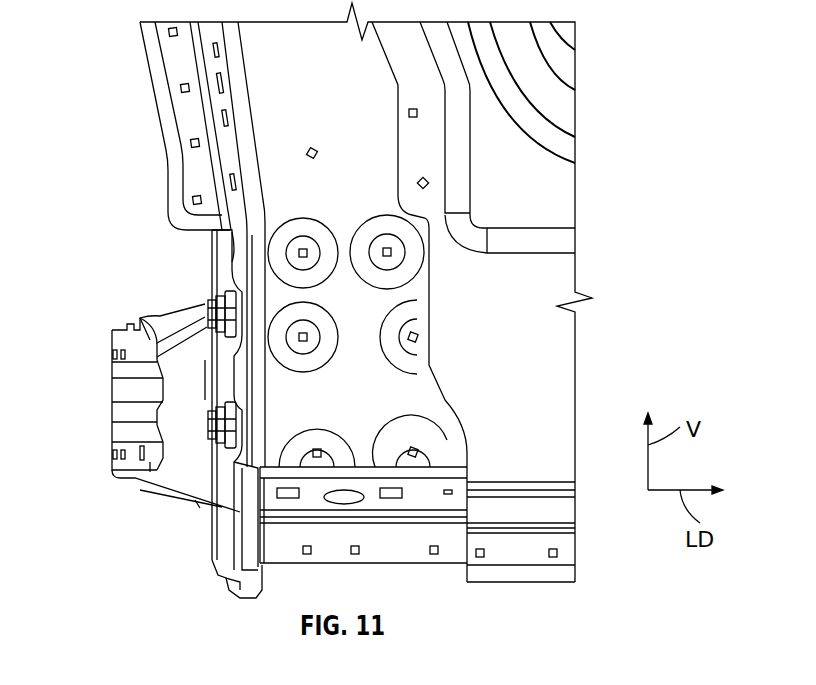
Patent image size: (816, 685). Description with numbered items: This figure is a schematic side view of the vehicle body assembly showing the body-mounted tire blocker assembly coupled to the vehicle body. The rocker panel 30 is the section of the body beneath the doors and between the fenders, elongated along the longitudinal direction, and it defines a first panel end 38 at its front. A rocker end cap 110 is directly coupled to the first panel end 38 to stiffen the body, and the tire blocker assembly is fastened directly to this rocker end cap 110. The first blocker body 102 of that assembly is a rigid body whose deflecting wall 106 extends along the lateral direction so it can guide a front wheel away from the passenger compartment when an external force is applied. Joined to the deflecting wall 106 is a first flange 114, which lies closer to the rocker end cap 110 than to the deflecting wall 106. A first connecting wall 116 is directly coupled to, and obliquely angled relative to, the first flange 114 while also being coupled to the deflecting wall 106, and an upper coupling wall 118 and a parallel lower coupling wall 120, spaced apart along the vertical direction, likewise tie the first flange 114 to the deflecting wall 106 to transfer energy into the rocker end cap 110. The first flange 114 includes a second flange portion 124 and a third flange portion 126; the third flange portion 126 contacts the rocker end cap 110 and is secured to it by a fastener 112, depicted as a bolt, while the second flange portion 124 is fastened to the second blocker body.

The rocker panel 30 is at (565, 382).
The first panel end 38 is at (423, 412).
The first blocker body 102 is at (192, 505).
The deflecting wall 106 is at (118, 367).
The rocker end cap 110 is at (258, 408).
The fastener 112 is at (210, 312).
The first flange 114 is at (212, 256).
The first connecting wall 116 is at (130, 475).
The upper coupling wall 118 is at (158, 314).
The lower coupling wall 120 is at (173, 488).
The second flange portion 124 is at (238, 587).
The third flange portion 126 is at (220, 377).